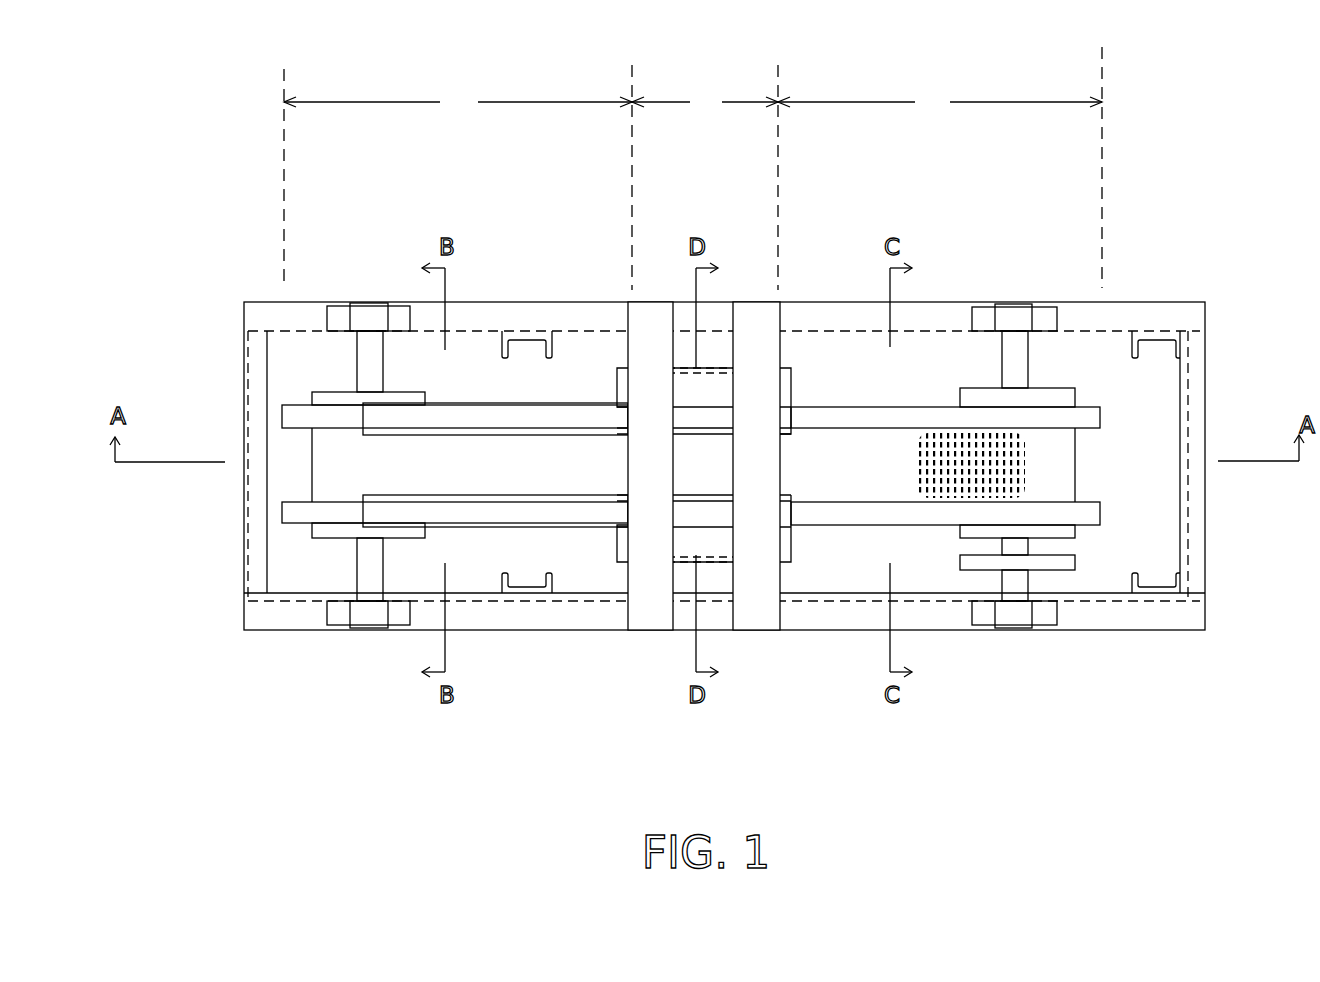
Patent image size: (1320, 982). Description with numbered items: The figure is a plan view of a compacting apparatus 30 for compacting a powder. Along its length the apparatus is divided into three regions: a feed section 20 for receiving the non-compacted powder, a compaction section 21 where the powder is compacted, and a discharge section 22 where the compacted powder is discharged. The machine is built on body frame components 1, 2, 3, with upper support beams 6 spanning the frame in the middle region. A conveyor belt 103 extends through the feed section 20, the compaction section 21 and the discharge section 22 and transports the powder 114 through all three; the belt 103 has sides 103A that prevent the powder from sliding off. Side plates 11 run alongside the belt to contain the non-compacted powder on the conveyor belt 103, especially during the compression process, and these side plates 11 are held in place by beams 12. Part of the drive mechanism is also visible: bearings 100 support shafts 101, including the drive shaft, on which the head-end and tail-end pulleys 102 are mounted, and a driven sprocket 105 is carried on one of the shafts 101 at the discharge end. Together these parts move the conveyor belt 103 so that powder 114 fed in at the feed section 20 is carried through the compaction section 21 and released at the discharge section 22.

The body frame component 1 is at (552, 302).
The body frame component 2 is at (247, 556).
The body frame component 3 is at (522, 345).
The upper support beam 6 is at (658, 305).
The side plate 11 is at (480, 438).
The beam 12 is at (617, 398).
The feed section 20 is at (458, 177).
The compaction section 21 is at (705, 177).
The discharge section 22 is at (940, 167).
The compacting apparatus 30 is at (258, 152).
The bearing 100 is at (405, 302).
The drive shaft 101 is at (383, 358).
The tail pulley 102 is at (355, 392).
The conveyor belt 103 is at (788, 469).
The side 103A is at (825, 407).
The driven sprocket 105 is at (962, 558).
The powder 114 is at (918, 478).